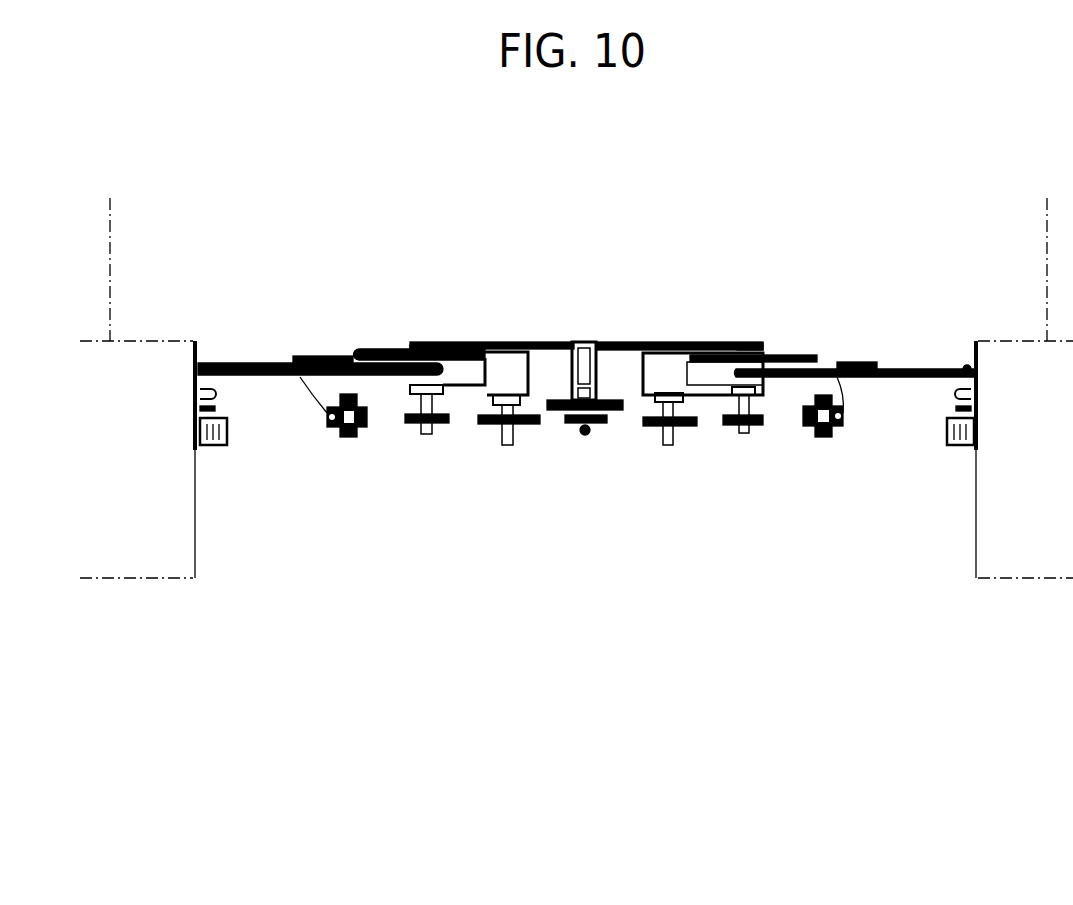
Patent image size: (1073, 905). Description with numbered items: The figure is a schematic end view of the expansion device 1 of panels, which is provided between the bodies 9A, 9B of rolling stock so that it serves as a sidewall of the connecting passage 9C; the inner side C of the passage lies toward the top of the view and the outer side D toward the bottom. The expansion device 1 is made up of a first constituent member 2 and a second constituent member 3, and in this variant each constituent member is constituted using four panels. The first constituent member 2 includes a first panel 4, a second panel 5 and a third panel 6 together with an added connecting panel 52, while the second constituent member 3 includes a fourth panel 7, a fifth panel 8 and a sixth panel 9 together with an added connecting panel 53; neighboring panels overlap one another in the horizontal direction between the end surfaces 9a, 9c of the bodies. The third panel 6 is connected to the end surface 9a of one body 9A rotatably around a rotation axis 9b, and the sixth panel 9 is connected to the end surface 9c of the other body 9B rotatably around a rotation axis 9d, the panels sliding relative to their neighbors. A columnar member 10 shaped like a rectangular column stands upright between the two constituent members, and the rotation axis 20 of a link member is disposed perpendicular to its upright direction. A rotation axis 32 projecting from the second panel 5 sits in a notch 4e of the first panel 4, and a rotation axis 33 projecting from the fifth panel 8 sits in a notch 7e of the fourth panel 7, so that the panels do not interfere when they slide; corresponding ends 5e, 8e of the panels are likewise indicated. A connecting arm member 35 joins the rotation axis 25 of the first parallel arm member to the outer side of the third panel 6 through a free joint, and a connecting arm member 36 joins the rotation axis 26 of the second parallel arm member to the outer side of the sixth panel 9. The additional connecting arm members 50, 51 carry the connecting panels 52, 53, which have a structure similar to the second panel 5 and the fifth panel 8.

The expansion device 1 is at (626, 331).
The first constituent member 2 is at (750, 336).
The second constituent member 3 is at (513, 337).
The first panel 4 is at (674, 336).
The notch 4e is at (634, 405).
The second panel 5 is at (798, 349).
The end of first contact plate 5e is at (704, 399).
The third panel 6 is at (892, 362).
The fourth panel 7 is at (537, 337).
The notch 7e is at (541, 405).
The fifth panel 8 is at (397, 341).
The end of second contact plate 8e is at (446, 403).
The sixth panel 9 is at (261, 358).
The end surface 9a is at (975, 478).
The rotation axis 9b is at (963, 368).
The end surface 9c is at (196, 497).
The rotation axis 9d is at (205, 368).
The body 9A is at (988, 516).
The body 9B is at (197, 513).
The connecting passage 9C is at (483, 201).
The columnar member 10 is at (582, 343).
The rotation axis 20 is at (585, 438).
The rotation axis 25 is at (824, 438).
The rotation axis 26 is at (348, 438).
The rotation axis 32 is at (668, 440).
The rotation axis 33 is at (507, 428).
The connecting arm member 35 is at (848, 370).
The connecting arm member 36 is at (317, 380).
The connecting arm member 50 is at (743, 434).
The connecting arm member 51 is at (416, 424).
The connecting panel 52 is at (843, 351).
The connecting panel 53 is at (329, 354).
The inner side C is at (327, 213).
The outer side D is at (330, 572).